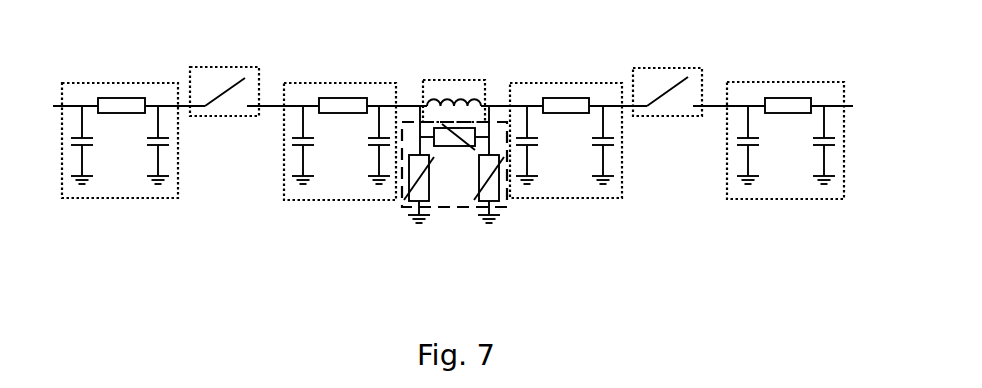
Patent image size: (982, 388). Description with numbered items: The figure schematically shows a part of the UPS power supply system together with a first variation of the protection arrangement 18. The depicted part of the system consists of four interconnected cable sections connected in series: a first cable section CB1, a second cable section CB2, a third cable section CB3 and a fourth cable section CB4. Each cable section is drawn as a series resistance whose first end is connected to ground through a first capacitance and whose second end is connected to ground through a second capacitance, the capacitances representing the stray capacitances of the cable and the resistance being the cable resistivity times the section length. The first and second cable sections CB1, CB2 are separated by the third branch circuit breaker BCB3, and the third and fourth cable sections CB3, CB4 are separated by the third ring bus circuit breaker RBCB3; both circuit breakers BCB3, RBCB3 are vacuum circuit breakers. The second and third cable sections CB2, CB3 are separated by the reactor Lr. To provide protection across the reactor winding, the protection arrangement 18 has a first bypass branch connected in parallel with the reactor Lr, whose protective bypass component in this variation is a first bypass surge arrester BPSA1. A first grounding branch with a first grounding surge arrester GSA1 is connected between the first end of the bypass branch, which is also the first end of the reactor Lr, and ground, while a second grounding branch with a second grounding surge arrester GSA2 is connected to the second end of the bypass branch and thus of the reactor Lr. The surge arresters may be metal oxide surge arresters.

The first cable section CB1 is at (120, 121).
The third branch circuit breaker BCB3 is at (224, 76).
The second cable section CB2 is at (340, 122).
The protection arrangement 18 is at (467, 149).
The reactor Lr is at (454, 86).
The third cable section CB3 is at (566, 123).
The third ring bus circuit breaker RBCB3 is at (667, 78).
The fourth cable section CB4 is at (785, 122).
The first grounding surge arrester GSA1 is at (412, 206).
The first bypass surge arrester BPSA1 is at (452, 147).
The second grounding surge arrester GSA2 is at (500, 204).